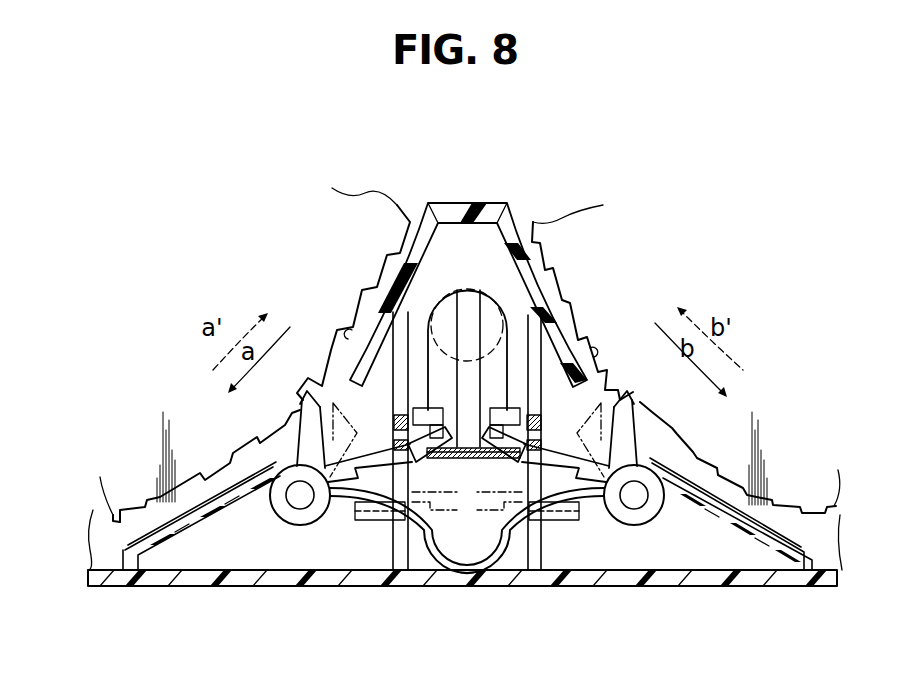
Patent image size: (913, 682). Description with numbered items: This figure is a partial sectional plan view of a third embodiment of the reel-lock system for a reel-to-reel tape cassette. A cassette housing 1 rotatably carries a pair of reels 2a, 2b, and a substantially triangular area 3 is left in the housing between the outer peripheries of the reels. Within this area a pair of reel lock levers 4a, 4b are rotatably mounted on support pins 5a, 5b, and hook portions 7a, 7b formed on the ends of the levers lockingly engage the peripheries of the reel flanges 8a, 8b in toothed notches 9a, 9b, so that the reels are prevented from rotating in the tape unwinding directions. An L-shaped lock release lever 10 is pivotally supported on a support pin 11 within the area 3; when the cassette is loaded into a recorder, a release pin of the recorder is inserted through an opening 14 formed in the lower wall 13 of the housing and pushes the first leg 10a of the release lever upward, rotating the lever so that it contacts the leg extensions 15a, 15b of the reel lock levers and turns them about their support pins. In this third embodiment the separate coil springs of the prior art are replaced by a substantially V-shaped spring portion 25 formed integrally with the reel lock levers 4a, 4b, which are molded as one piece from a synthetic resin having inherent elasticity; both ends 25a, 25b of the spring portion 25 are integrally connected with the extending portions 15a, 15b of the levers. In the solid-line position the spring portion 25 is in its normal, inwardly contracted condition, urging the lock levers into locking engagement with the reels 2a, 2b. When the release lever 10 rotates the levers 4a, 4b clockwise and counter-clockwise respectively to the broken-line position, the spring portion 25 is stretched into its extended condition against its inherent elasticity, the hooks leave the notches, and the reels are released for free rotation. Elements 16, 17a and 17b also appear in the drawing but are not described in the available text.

The cassette housing 1 is at (190, 586).
The reel 2a is at (104, 482).
The reel 2b is at (832, 482).
The triangular area 3 is at (433, 562).
The reel lock lever 4a is at (288, 433).
The reel lock lever 4b is at (650, 435).
The support pin 5a is at (301, 500).
The support pin 5b is at (637, 500).
The hook portion 7a is at (311, 406).
The hook portion 7b is at (626, 406).
The reel flange 8a is at (348, 208).
The reel flange 8b is at (567, 233).
The toothed notch 9a is at (352, 330).
The toothed notch 9b is at (590, 348).
The lock release lever 10 is at (486, 302).
The first leg 10a is at (468, 290).
The support pin 11 is at (400, 427).
The lower wall 13 is at (273, 555).
The opening 14 is at (435, 312).
The leg extension 15a is at (408, 443).
The leg extension 15b is at (528, 443).
The guide block 16 is at (488, 365).
The cross bar 17a is at (490, 427).
The lower cross member 17b is at (452, 462).
The V-shaped spring portion 25 is at (480, 580).
The spring portion end 25a is at (372, 504).
The spring portion end 25b is at (595, 504).